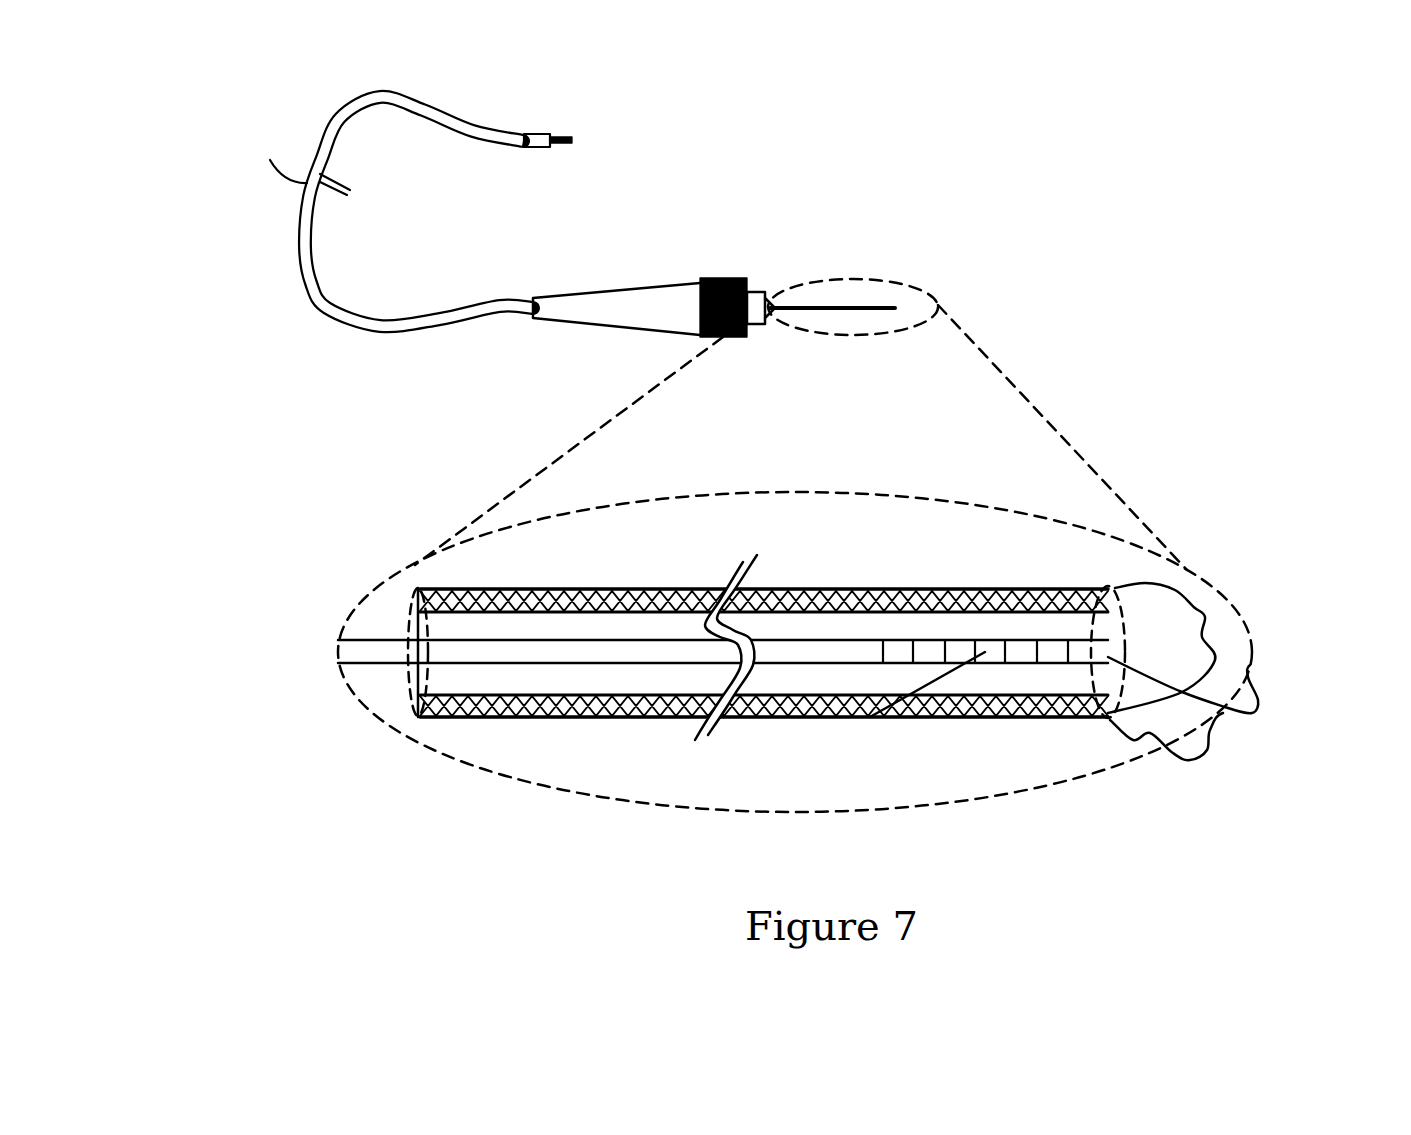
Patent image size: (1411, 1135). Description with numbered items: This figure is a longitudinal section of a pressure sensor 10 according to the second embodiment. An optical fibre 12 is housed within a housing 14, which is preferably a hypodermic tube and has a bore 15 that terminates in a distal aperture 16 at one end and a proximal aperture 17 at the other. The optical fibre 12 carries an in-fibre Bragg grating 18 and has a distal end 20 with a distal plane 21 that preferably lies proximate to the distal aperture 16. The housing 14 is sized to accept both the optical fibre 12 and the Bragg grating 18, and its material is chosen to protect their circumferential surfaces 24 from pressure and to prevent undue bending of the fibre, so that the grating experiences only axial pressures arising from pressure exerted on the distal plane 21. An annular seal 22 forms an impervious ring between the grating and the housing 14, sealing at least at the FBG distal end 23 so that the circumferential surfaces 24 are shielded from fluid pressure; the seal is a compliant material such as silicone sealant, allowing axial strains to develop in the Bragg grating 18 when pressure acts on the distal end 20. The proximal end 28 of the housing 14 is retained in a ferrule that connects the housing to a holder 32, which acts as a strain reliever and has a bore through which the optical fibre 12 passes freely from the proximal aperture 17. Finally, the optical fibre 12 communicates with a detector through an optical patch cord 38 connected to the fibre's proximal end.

The pressure sensor 10 is at (800, 300).
The optical fibre 12 is at (613, 587).
The housing 14 is at (570, 623).
The bore 15 is at (1205, 615).
The distal aperture 16 is at (1223, 713).
The proximal aperture 17 is at (410, 712).
The in-fibre Bragg grating 18 is at (870, 717).
The distal end 20 is at (1250, 665).
The distal plane 21 is at (1115, 583).
The annular seal 22 is at (930, 590).
The FBG distal end 23 is at (952, 717).
The circumferential surfaces 24 is at (783, 590).
The proximal end 28 is at (417, 587).
The holder 32 is at (750, 277).
The optical patch cord 38 is at (300, 228).